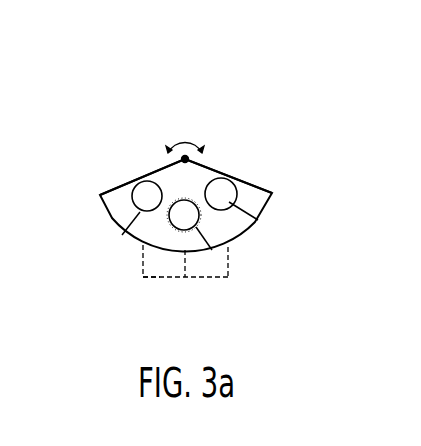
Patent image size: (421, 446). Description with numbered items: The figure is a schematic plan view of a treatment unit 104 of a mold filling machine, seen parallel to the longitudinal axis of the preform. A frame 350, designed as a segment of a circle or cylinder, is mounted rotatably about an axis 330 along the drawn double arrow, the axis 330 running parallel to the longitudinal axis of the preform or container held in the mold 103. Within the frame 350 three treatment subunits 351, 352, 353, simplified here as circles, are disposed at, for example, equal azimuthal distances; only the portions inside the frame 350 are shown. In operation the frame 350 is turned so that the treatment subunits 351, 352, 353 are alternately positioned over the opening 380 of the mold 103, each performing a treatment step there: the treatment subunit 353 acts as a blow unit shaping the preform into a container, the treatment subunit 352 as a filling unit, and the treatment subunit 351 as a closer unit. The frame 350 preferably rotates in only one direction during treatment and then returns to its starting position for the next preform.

The mold 103 is at (150, 277).
The treatment unit 104 is at (248, 167).
The axis 330 is at (157, 178).
The frame 350 is at (123, 183).
The treatment subunit 351 is at (118, 233).
The treatment subunit 352 is at (190, 200).
The treatment subunit 353 is at (258, 220).
The opening 380 is at (212, 250).